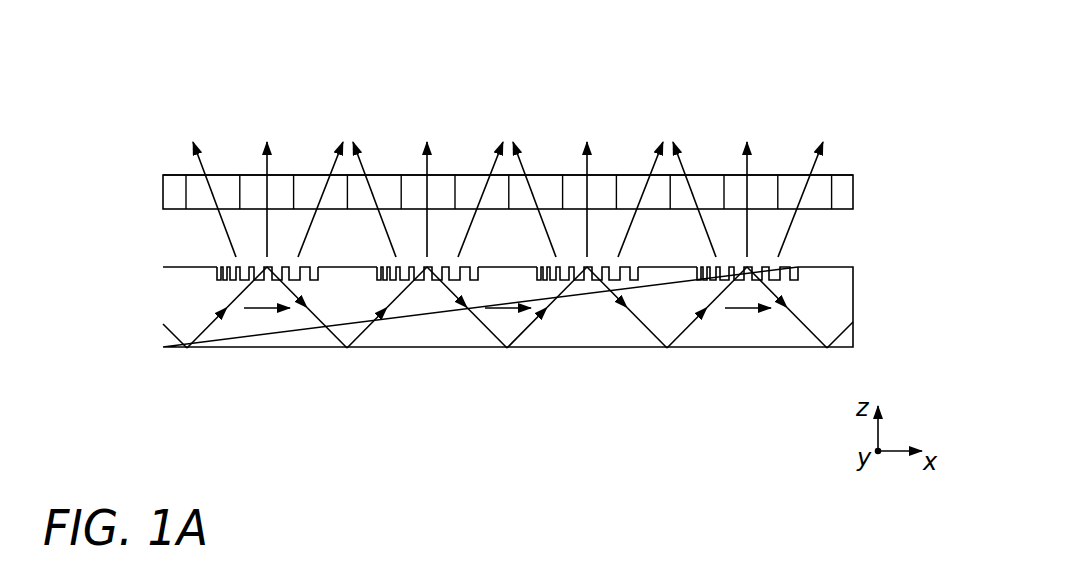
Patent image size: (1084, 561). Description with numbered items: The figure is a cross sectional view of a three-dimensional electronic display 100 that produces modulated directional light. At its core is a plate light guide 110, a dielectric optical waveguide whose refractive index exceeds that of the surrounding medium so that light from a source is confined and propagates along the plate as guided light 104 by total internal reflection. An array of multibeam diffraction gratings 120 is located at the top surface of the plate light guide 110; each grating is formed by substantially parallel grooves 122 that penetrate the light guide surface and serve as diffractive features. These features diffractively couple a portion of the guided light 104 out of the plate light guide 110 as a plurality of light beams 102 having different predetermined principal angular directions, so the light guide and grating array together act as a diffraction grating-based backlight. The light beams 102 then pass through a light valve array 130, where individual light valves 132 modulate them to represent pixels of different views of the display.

The 3D electronic display 100 is at (219, 46).
The light beams 102 is at (845, 149).
The guided light 104 is at (474, 329).
The plate light guide 110 is at (865, 267).
The multibeam diffraction grating 120 is at (220, 261).
The diffractive features 122 is at (625, 268).
The light valve array 130 is at (853, 192).
The light valve 132 is at (636, 175).